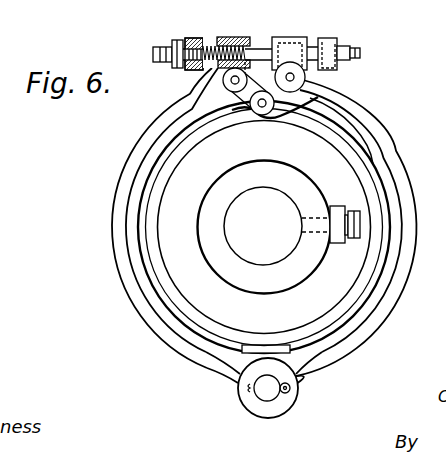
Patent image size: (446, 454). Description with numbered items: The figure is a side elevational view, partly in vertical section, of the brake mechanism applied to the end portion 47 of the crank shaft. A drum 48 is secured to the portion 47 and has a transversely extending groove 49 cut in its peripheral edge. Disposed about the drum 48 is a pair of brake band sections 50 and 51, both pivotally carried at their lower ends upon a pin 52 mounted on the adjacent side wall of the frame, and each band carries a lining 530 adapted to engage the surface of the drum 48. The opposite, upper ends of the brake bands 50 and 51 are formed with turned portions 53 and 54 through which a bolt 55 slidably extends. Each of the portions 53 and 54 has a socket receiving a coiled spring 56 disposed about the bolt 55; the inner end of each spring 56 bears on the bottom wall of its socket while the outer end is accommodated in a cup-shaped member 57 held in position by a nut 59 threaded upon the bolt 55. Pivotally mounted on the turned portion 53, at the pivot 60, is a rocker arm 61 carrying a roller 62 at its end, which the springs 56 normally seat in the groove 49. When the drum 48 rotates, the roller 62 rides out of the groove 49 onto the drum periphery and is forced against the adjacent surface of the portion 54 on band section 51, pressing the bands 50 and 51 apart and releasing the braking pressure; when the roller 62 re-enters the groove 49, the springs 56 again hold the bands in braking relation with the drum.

The portion of the crank shaft 47 is at (273, 250).
The drum 48 is at (338, 162).
The groove 49 is at (263, 106).
The brake band section 50 is at (140, 278).
The brake band section 51 is at (396, 190).
The pin 52 is at (268, 390).
The turned portion 53 is at (233, 37).
The turned portion 54 is at (290, 45).
The bolt 55 is at (258, 52).
The coiled spring 56 is at (205, 40).
The cup-shaped member 57 is at (328, 56).
The nut 59 is at (187, 42).
The pivot of rocker arm 60 is at (235, 85).
The rocker arm 61 is at (243, 125).
The roller 62 is at (297, 123).
The lining 530 is at (357, 308).